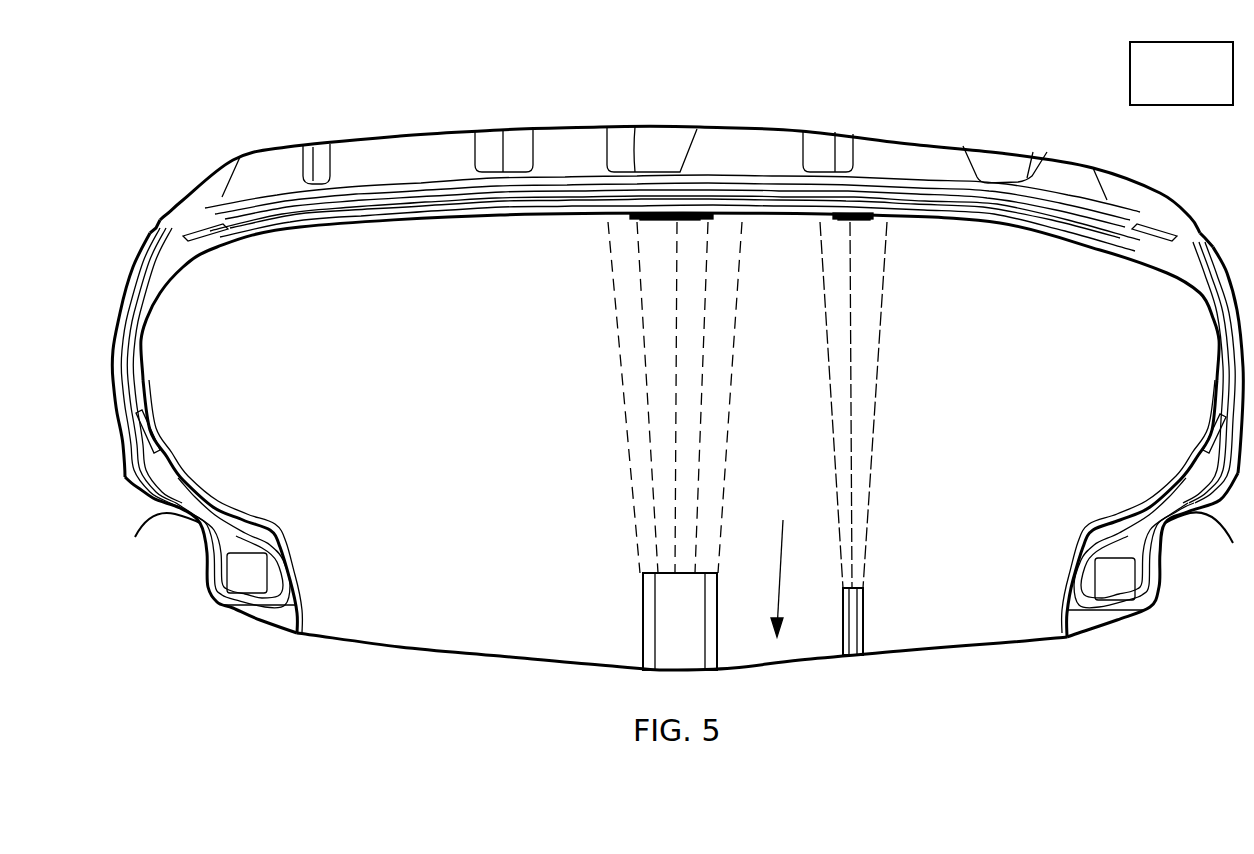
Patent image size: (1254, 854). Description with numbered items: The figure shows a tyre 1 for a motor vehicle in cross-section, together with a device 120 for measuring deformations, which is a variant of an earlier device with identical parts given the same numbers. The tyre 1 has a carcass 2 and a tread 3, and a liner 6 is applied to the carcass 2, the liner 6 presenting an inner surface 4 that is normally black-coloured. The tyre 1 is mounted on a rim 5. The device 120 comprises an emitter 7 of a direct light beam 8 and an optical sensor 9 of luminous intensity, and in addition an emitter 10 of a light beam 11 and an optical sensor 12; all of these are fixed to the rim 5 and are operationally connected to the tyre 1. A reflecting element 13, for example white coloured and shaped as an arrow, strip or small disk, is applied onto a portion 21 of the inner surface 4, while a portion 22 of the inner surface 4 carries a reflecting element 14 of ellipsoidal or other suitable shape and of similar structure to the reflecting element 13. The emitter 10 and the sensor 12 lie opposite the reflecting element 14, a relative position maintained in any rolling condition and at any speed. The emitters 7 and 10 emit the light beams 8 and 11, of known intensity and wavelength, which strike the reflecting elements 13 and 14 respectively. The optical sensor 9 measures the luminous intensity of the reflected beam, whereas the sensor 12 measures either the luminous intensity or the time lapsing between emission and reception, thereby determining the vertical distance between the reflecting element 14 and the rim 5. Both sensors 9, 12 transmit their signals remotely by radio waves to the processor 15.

The tyre 1 is at (677, 335).
The carcass 2 is at (1050, 217).
The tread 3 is at (563, 128).
The inner surface 4 is at (458, 220).
The rim 5 is at (440, 643).
The liner 6 is at (193, 260).
The emitter 7 is at (663, 627).
The direct light beam 8 is at (735, 355).
The optical sensor 9 is at (713, 607).
The emitter 10 is at (852, 647).
The light beam 11 is at (872, 448).
The optical sensor 12 is at (863, 613).
The reflecting element 13 is at (690, 220).
The reflecting element 14 is at (860, 223).
The processor 15 is at (1153, 72).
The portion of the inner surface 21 is at (657, 212).
The portion of the inner surface 22 is at (860, 213).
The device for measuring deformations 120 is at (789, 563).